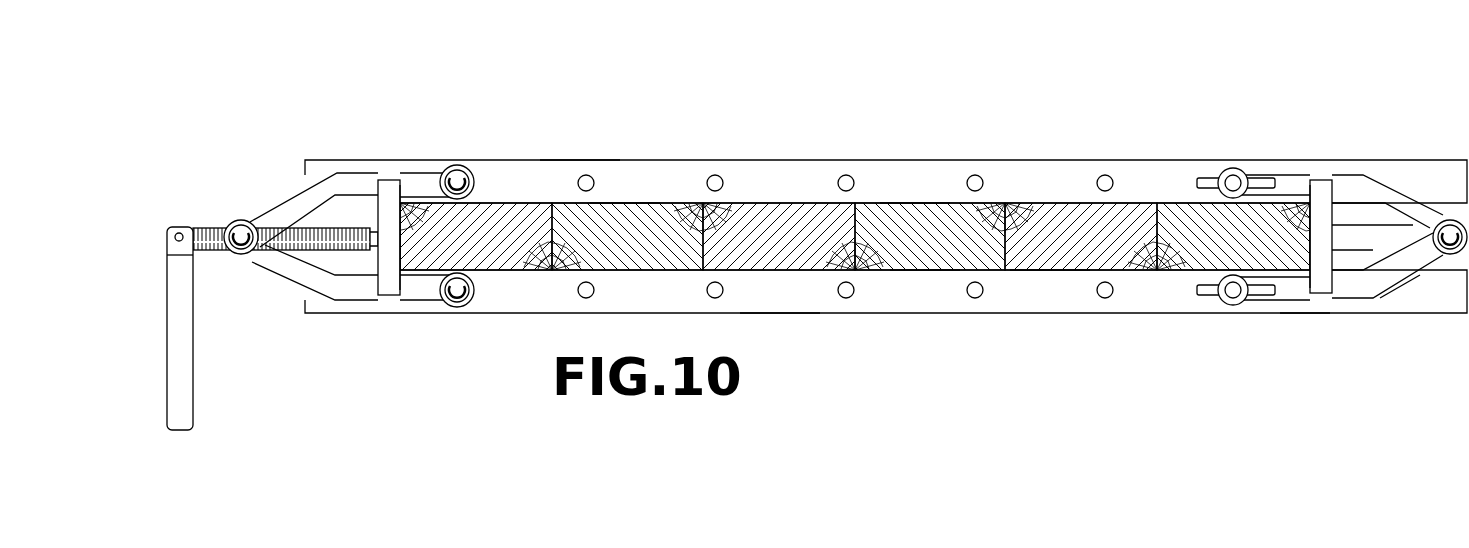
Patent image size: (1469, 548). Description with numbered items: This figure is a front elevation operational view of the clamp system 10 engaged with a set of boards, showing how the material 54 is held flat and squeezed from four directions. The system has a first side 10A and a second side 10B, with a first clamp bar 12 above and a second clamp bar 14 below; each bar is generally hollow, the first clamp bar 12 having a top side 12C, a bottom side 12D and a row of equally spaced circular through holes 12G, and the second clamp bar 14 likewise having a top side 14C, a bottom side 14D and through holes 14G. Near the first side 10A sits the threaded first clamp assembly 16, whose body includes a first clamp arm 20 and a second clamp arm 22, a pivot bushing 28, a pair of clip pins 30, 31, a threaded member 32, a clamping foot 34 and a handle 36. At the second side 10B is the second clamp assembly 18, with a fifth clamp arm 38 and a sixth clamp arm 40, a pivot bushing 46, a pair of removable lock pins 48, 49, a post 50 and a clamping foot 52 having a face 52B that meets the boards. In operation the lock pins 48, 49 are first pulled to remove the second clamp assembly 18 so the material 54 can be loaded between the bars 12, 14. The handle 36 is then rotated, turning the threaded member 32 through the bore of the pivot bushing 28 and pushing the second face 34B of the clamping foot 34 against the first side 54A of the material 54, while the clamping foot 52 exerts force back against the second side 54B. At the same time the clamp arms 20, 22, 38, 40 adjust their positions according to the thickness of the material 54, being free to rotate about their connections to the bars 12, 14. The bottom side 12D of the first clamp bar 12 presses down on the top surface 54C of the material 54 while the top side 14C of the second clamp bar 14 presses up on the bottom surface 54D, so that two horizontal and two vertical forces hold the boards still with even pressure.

The clamp system 10 is at (1033, 115).
The first side 10A is at (248, 130).
The second side 10B is at (1427, 150).
The first clamp bar 12 is at (673, 160).
The top side 12C is at (575, 160).
The bottom side 12D is at (647, 203).
The through holes 12G is at (975, 175).
The second clamp bar 14 is at (1133, 313).
The top side 14C is at (1032, 263).
The bottom side 14D is at (777, 313).
The through holes 14G is at (975, 298).
The first clamp assembly 16 is at (267, 277).
The second clamp assembly 18 is at (1397, 297).
The first clamp arm 20 is at (290, 193).
The second clamp arm 22 is at (345, 297).
The pivot bushing 28 is at (241, 245).
The clip pin 30 is at (458, 181).
The clip pin 31 is at (459, 290).
The threaded member 32 is at (298, 252).
The clamping foot 34 is at (387, 180).
The second face 34B is at (402, 190).
The handle 36 is at (196, 380).
The fifth clamp arm 38 is at (1393, 192).
The sixth clamp arm 40 is at (1302, 297).
The pivot bushing 46 is at (1452, 243).
The removable lock pin 48 is at (1232, 180).
The removable lock pin 49 is at (1232, 292).
The post 50 is at (1377, 242).
The clamping foot 52 is at (1338, 212).
The right block face 52B is at (1310, 190).
The material 54 is at (792, 215).
The first side 54A is at (402, 255).
The second side 54B is at (1312, 240).
The top surface 54C is at (910, 203).
The bottom surface 54D is at (926, 270).